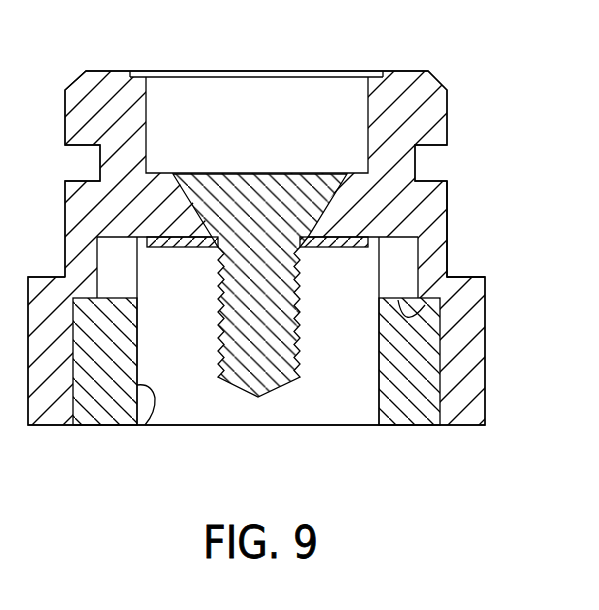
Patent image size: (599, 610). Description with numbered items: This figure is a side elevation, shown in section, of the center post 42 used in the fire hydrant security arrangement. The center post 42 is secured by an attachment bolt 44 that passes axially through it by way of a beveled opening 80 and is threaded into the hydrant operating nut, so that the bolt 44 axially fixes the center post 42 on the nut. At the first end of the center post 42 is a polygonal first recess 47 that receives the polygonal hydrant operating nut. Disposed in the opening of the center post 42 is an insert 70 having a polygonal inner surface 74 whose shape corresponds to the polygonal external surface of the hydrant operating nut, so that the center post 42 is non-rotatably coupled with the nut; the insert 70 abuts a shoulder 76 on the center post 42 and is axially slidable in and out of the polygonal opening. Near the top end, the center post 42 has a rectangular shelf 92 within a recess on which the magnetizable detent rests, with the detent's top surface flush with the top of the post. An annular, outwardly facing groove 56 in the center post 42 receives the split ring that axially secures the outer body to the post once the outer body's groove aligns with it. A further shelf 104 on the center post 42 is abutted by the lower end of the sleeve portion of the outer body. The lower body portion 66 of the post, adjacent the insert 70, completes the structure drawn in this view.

The center post 42 is at (488, 387).
The attachment bolt 44 is at (228, 197).
The polygonal first recess 47 is at (357, 418).
The annular outwardly facing groove 56 is at (428, 158).
The lower body 66 is at (52, 427).
The insert 70 is at (410, 418).
The polygonal inner surface 74 is at (148, 425).
The shoulder 76 is at (400, 300).
The beveled opening 80 is at (305, 177).
The rectangular shelf 92 is at (212, 98).
The shelf 104 is at (467, 277).